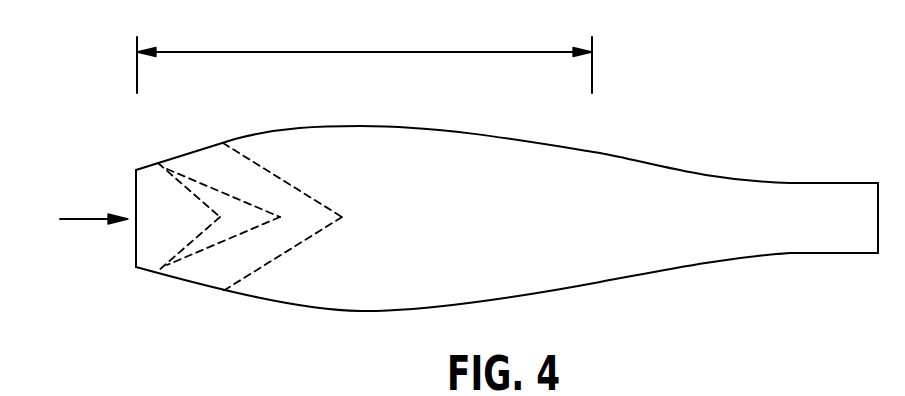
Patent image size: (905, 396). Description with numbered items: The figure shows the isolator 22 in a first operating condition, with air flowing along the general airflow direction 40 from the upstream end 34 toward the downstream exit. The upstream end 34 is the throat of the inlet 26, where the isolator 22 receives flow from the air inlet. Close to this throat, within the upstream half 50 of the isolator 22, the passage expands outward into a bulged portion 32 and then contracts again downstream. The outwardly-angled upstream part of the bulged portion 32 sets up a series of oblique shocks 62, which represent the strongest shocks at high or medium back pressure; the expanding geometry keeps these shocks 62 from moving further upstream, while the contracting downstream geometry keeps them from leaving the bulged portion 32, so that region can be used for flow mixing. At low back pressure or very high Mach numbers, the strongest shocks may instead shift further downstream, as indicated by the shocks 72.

The isolator 22 is at (312, 97).
The inlet 26 is at (136, 237).
The bulged portion 32 is at (530, 182).
The upstream end 34 is at (136, 268).
The general airflow direction 40 is at (96, 217).
The upstream half 50 is at (368, 51).
The oblique shocks 62 is at (195, 180).
The shocks 72 is at (248, 278).